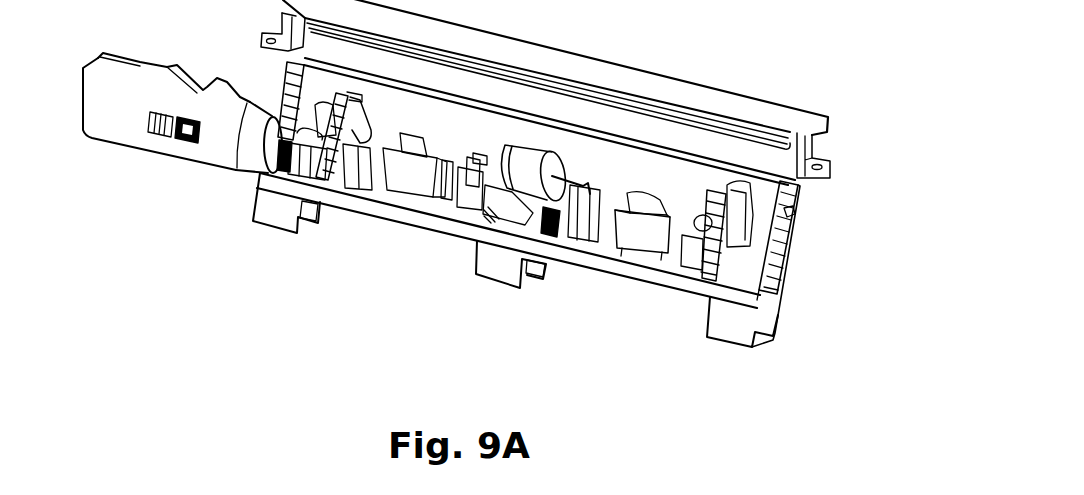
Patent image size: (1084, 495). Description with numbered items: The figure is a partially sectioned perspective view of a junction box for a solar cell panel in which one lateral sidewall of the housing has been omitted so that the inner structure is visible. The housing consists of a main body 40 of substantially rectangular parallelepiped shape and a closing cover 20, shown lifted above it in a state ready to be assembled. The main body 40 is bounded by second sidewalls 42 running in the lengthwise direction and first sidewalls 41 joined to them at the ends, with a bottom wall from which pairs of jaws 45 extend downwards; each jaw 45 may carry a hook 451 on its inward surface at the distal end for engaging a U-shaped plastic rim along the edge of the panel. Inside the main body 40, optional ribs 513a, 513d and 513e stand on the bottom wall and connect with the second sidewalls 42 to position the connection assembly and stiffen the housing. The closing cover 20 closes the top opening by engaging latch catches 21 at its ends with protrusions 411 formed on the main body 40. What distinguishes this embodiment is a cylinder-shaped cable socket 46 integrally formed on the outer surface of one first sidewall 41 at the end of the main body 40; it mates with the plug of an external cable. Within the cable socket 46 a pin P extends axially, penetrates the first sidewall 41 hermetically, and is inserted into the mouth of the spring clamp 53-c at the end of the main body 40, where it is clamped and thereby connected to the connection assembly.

The closing cover 20 is at (683, 85).
The latch catches 21 is at (826, 134).
The main body 40 is at (534, 184).
The first sidewalls 41 is at (780, 263).
The protrusions 411 is at (796, 209).
The second sidewalls 42 is at (300, 60).
The jaws 45 is at (261, 244).
The hook 451 is at (307, 227).
The cable socket 46 is at (170, 151).
The pin P is at (290, 163).
The spring clamp 53-c is at (373, 175).
The rib 513a is at (533, 237).
The rib 513d is at (600, 257).
The rib 513e is at (710, 237).